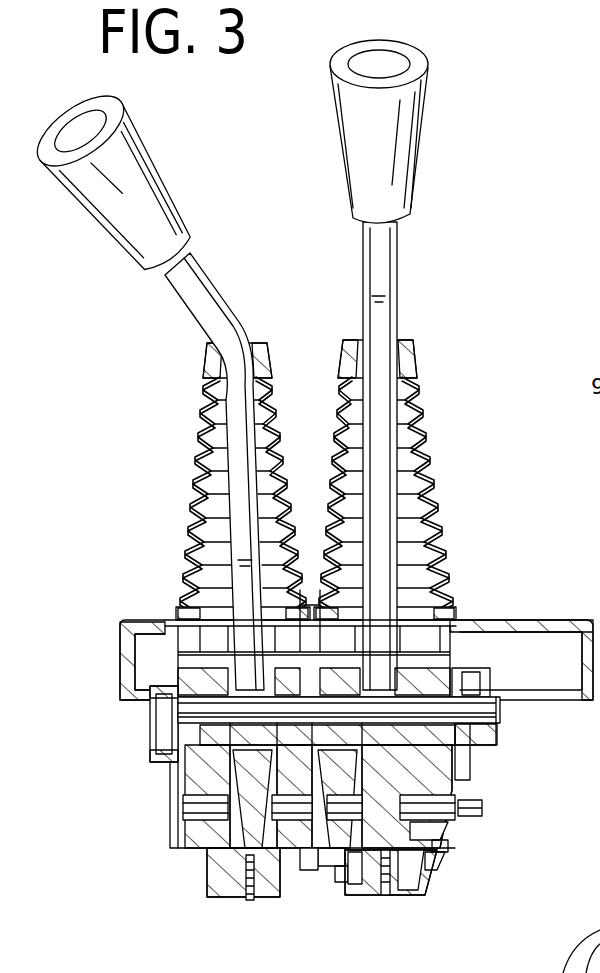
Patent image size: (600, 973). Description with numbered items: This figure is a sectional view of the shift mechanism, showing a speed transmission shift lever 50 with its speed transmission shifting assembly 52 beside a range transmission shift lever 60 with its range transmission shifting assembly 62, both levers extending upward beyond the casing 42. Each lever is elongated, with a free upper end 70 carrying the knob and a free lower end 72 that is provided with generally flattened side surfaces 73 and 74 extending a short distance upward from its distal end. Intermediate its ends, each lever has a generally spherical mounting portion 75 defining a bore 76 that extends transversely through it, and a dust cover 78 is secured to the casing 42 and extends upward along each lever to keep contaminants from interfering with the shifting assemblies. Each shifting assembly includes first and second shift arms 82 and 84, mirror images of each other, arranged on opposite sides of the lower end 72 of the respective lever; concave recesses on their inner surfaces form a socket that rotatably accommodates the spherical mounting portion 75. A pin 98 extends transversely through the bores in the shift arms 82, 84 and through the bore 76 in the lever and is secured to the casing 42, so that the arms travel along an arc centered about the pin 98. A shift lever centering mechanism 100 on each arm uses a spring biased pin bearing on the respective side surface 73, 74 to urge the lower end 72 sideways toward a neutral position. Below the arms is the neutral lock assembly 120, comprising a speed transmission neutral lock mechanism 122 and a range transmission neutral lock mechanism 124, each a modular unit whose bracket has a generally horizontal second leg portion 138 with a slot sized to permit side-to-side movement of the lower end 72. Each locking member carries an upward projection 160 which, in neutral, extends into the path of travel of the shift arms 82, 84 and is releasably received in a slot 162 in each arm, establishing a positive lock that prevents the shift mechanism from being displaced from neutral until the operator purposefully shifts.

The casing 42 is at (148, 752).
The speed transmission shift lever 50 is at (407, 365).
The speed transmission shifting assembly 52 is at (500, 755).
The range transmission shift lever 60 is at (171, 173).
The range transmission shifting assembly 62 is at (168, 785).
The free upper end 70 is at (425, 113).
The free lower end 72 is at (416, 880).
The flattened side surface 73 is at (446, 832).
The flattened side surface 74 is at (354, 884).
The spherical mounting portion 75 is at (402, 690).
The bore 76 is at (360, 692).
The dust cover 78 is at (440, 492).
The first shift arm 82 is at (454, 786).
The second shift arm 84 is at (330, 857).
The pin 98 is at (500, 704).
The shift lever centering mechanism 100 is at (462, 809).
The neutral lock assembly 120 is at (192, 893).
The speed transmission neutral lock mechanism 122 is at (442, 890).
The range transmission neutral lock mechanism 124 is at (247, 902).
The second leg portion 138 is at (384, 895).
The upward projection 160 is at (438, 866).
The slot 162 is at (445, 850).